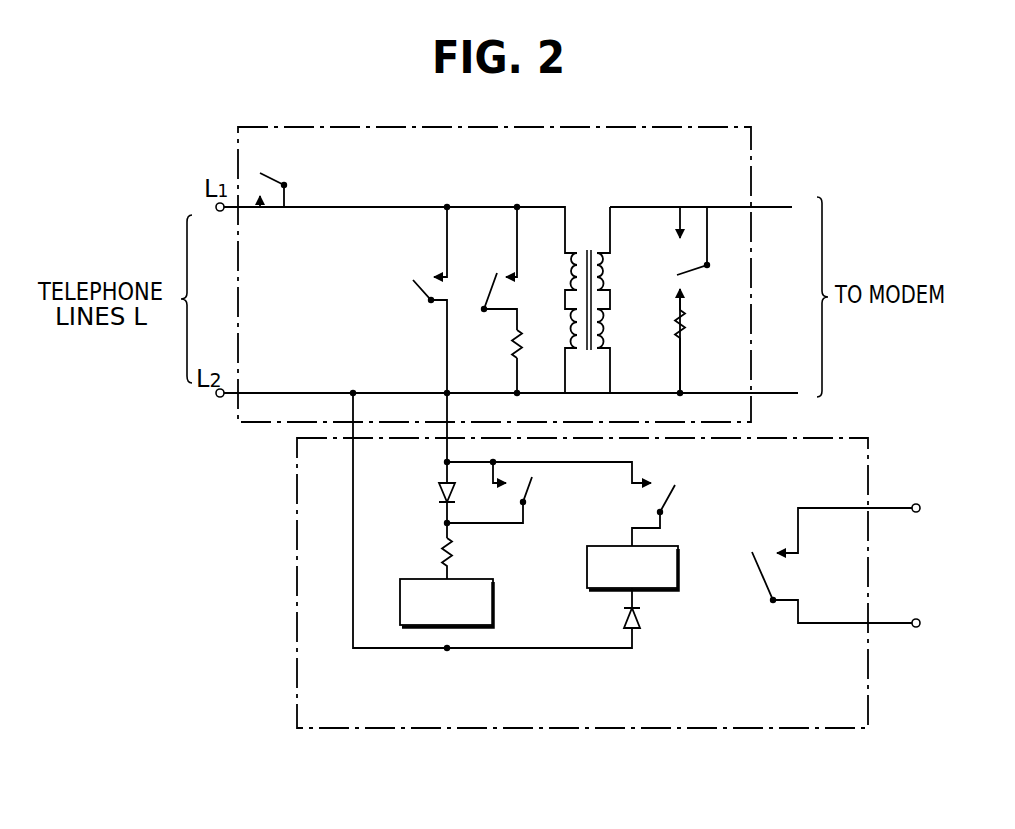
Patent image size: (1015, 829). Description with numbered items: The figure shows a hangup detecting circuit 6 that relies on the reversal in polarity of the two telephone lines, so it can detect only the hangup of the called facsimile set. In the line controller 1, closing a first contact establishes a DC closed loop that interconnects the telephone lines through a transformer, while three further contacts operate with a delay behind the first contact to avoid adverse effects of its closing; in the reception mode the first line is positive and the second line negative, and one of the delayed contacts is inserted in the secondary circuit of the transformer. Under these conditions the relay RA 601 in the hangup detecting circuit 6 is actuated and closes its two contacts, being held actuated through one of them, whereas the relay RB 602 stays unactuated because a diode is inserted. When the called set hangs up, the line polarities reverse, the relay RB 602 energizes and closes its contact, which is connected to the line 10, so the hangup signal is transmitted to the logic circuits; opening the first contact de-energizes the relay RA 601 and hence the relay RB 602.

The line controller 1 is at (751, 150).
The hangup detecting circuit 6 is at (868, 445).
The relay RA 601 is at (494, 590).
The relay RB 602 is at (679, 552).
The line 10 is at (927, 517).